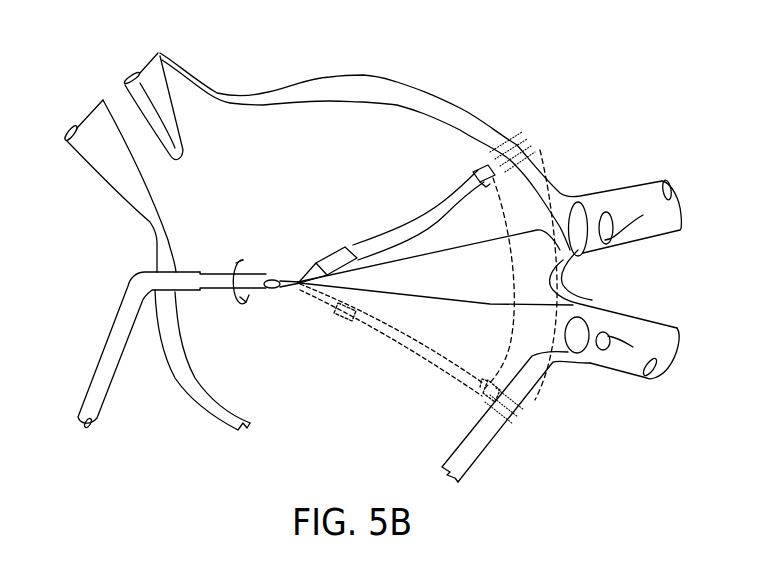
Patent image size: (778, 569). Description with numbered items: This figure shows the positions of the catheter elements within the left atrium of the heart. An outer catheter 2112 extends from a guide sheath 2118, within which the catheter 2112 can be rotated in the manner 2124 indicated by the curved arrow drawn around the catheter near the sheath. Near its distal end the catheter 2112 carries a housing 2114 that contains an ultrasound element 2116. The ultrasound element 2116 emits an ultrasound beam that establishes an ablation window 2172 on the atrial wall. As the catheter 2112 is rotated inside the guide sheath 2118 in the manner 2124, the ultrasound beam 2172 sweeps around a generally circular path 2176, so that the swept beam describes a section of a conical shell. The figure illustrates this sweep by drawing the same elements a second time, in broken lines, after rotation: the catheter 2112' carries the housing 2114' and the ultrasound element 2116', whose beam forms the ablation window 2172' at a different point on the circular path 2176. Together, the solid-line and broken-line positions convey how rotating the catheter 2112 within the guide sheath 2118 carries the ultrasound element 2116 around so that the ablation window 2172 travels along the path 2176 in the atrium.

The catheter 2112 is at (382, 226).
The strut (alternate position) 2112' is at (389, 340).
The housing 2114 is at (442, 158).
The clamp (alternate position) 2114' is at (442, 401).
The ultrasound element 2116 is at (475, 209).
The pin (alternate position) 2116' is at (430, 370).
The guide sheath 2118 is at (132, 297).
The rotational movement 2124 is at (250, 295).
The ablation window 2172 is at (585, 164).
The anchor tube (alternate position) 2172' is at (516, 420).
The generally circular path 2176 is at (532, 348).